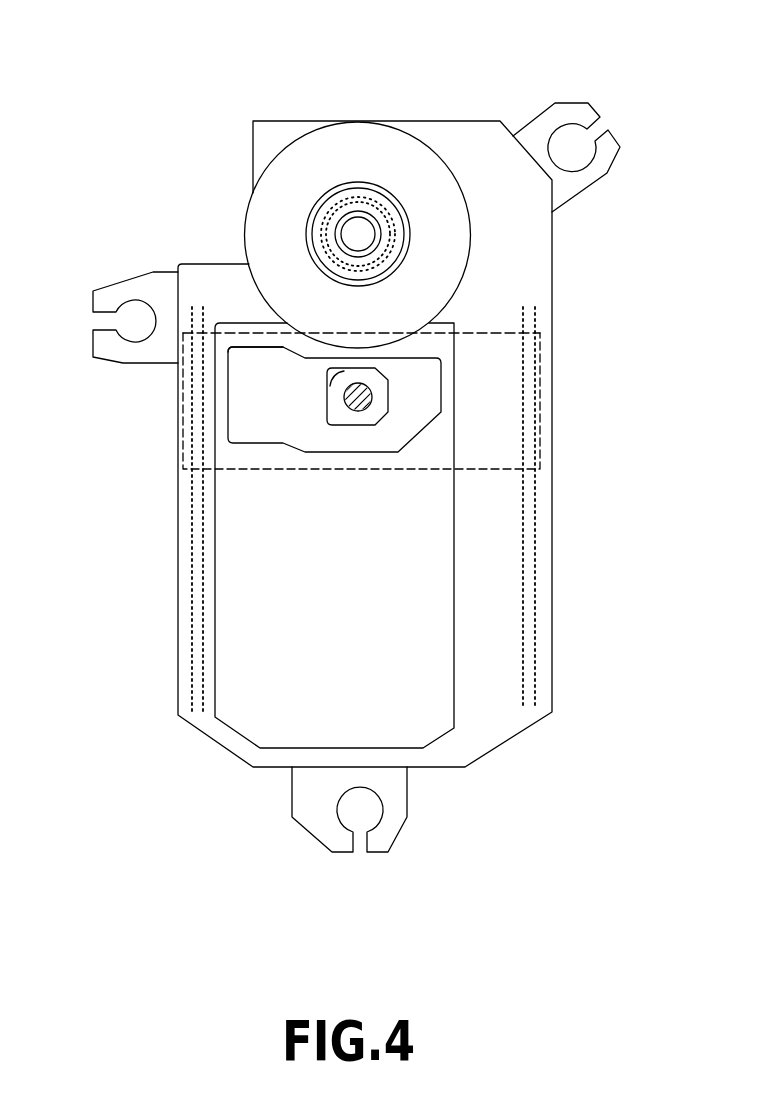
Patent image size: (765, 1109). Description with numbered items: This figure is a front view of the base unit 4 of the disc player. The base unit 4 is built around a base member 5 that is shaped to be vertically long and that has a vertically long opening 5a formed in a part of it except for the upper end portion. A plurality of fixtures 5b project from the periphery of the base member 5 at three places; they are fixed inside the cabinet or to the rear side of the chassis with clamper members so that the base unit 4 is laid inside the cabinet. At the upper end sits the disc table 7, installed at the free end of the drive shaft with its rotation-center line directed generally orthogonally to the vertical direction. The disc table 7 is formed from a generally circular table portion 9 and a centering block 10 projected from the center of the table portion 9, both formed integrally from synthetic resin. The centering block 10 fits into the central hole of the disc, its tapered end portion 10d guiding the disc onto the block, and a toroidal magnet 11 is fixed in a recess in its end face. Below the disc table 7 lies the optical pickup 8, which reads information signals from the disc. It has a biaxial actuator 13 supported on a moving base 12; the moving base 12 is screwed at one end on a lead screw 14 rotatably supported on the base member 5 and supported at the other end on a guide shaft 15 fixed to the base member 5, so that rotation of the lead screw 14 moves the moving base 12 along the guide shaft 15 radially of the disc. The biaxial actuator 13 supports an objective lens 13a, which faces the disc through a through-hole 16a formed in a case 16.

The base unit 4 is at (152, 113).
The base member 5 is at (512, 278).
The opening 5a is at (447, 673).
The fixtures 5b is at (568, 113).
The disc table 7 is at (438, 192).
The optical pickup 8 is at (297, 458).
The table portion 9 is at (402, 170).
The centering block 10 is at (312, 226).
The end portion 10d is at (335, 200).
The toroidal magnet 11 is at (357, 203).
The moving base 12 is at (423, 455).
The biaxial actuator 13 is at (330, 423).
The objective lens 13a is at (388, 397).
The lead screw 14 is at (188, 657).
The guide shaft 15 is at (542, 573).
The case 16 is at (418, 377).
The through-hole 16a is at (330, 392).